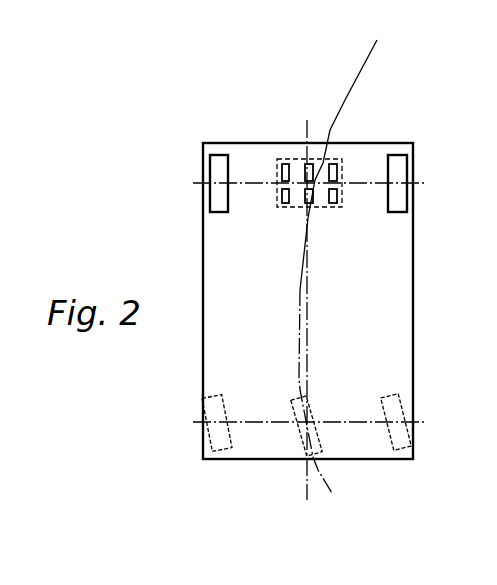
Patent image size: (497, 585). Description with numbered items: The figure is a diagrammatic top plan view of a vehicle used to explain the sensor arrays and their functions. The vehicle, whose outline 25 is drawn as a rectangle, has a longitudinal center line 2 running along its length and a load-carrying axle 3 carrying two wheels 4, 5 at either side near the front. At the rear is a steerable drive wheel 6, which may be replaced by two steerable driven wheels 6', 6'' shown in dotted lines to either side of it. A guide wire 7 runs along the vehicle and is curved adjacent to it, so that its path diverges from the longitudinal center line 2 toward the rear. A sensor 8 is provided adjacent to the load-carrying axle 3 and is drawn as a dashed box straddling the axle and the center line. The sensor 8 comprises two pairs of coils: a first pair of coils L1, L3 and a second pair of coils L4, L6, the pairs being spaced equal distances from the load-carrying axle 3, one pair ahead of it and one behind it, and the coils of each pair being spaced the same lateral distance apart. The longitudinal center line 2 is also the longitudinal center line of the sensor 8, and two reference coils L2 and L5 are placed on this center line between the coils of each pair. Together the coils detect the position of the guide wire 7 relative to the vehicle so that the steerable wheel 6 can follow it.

The longitudinal center line 2 is at (307, 482).
The load-carrying axle 3 is at (243, 184).
The wheel 4 is at (218, 202).
The wheel 5 is at (402, 202).
The steerable drive wheel 6 is at (309, 448).
The steerable driven wheel 6' is at (217, 447).
The steerable driven wheel 6'' is at (402, 447).
The guide wire 7 is at (344, 256).
The sensor 8 is at (347, 162).
The vehicle body 25 is at (407, 310).
The coil L1 is at (282, 163).
The reference coil L2 is at (312, 163).
The coil L3 is at (341, 160).
The coil L4 is at (280, 200).
The reference coil L5 is at (308, 198).
The coil L6 is at (333, 198).